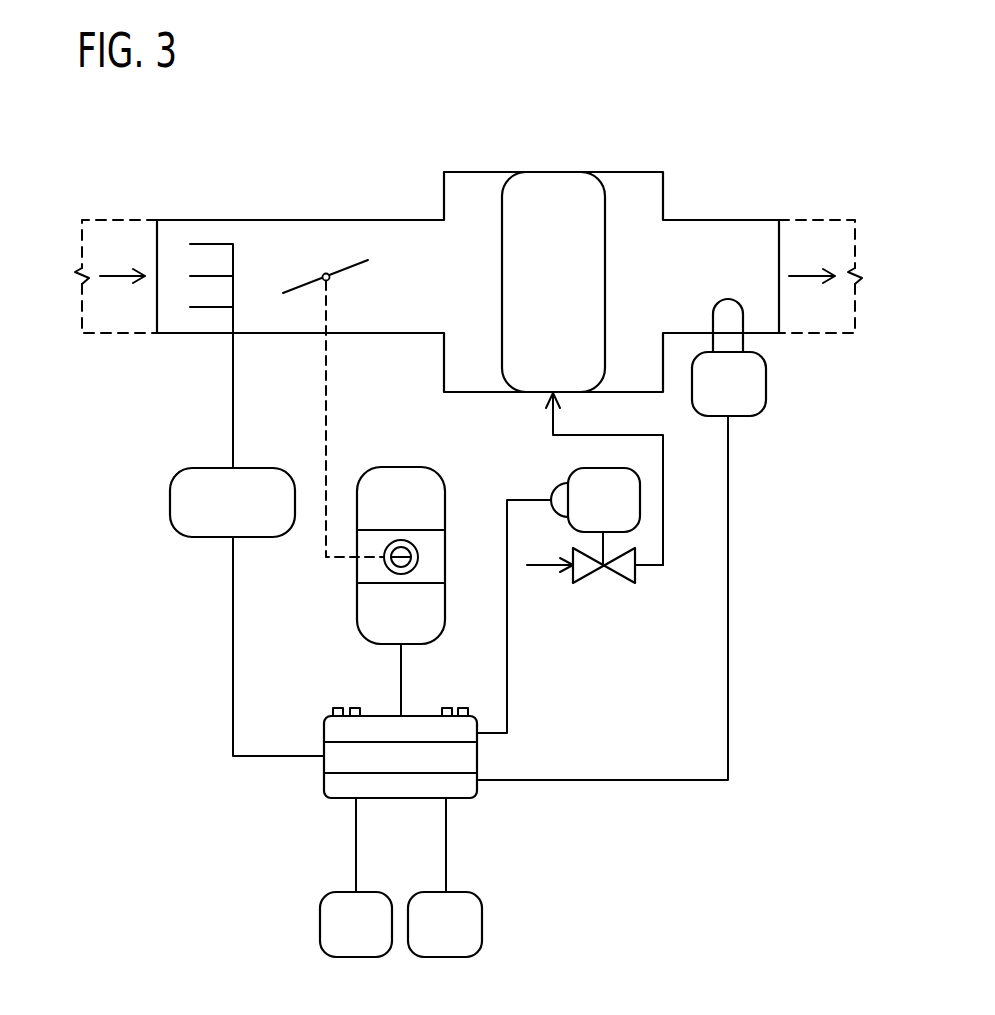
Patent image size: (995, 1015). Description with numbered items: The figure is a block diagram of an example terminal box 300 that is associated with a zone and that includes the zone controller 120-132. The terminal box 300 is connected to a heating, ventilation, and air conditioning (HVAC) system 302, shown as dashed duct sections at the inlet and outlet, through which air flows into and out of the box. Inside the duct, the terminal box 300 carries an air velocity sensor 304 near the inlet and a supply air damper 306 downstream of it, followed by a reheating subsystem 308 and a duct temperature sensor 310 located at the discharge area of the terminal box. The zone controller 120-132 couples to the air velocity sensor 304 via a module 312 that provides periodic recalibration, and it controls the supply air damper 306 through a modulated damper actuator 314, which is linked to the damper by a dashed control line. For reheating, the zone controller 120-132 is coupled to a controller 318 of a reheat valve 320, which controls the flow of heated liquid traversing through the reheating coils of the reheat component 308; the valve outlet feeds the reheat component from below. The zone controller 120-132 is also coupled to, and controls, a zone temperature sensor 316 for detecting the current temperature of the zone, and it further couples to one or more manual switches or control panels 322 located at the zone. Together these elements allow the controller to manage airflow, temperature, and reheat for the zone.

The terminal box 300 is at (660, 112).
The heating, ventilation, and air conditioning (HVAC) system 302 is at (107, 220).
The air velocity sensor 304 is at (215, 244).
The supply air damper 306 is at (350, 265).
The reheating subsystem 308 is at (577, 304).
The duct temperature sensor 310 is at (752, 400).
The module 312 is at (257, 517).
The modulated damper actuator 314 is at (425, 517).
The zone temperature sensor 316 is at (380, 941).
The controller 318 is at (627, 517).
The reheat valve 320 is at (590, 578).
The manual switches or control panels 322 is at (469, 941).
The zone controller 120-132 is at (338, 800).